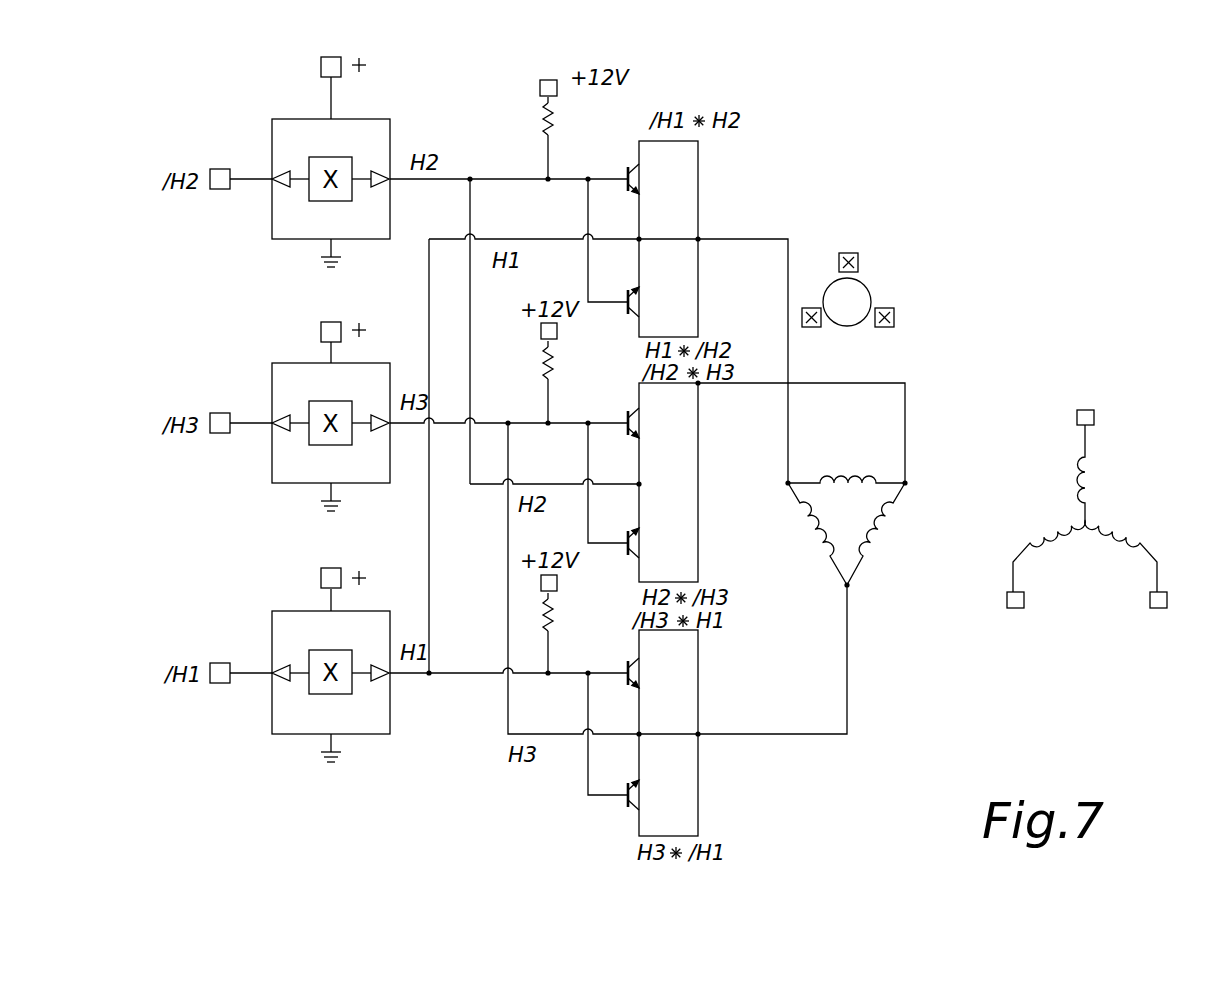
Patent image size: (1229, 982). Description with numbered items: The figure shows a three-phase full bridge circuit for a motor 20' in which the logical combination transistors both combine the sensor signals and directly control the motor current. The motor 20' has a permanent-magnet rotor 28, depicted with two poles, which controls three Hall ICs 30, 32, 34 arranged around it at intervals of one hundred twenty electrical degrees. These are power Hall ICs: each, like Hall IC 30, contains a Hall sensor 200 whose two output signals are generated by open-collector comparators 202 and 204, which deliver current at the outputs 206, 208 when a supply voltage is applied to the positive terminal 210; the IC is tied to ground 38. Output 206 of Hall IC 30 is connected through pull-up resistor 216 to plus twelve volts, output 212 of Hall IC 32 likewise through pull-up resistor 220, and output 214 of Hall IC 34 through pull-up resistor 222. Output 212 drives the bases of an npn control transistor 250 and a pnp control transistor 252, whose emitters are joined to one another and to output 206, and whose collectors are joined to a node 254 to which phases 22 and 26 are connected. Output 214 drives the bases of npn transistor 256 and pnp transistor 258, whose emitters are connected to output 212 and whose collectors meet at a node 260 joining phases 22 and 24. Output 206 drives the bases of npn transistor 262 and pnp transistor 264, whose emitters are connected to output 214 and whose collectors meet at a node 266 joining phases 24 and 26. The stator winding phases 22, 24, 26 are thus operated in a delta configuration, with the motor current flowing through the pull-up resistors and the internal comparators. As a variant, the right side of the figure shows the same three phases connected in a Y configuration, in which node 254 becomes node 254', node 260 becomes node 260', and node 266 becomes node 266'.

The motor 20' is at (931, 320).
The winding phase 22 is at (850, 478).
The winding phase 24 is at (890, 537).
The winding phase 26 is at (805, 535).
The permanent-magnet rotor 28 is at (872, 290).
The Hall IC 30 is at (383, 611).
The Hall IC 32 is at (383, 119).
The Hall IC 34 is at (383, 363).
The ground 38 is at (338, 270).
The Hall sensor 200 is at (323, 650).
The comparator 202 is at (389, 640).
The comparator 204 is at (282, 660).
The output 206 is at (413, 677).
The output 208 is at (223, 683).
The positive terminal 210 is at (321, 67).
The output 212 is at (412, 183).
The output 214 is at (408, 427).
The pull-up resistor 216 is at (557, 617).
The pull-up resistor 220 is at (556, 122).
The pull-up resistor 222 is at (543, 365).
The npn control transistor 250 is at (622, 168).
The pnp control transistor 252 is at (622, 312).
The node 254 is at (811, 443).
The node 254' is at (1104, 389).
The npn control transistor 256 is at (623, 413).
The pnp control transistor 258 is at (622, 556).
The node 260 is at (887, 443).
The node 260' is at (1150, 627).
The npn control transistor 262 is at (622, 665).
The pnp control transistor 264 is at (620, 800).
The node 266 is at (820, 606).
The node 266' is at (1016, 627).